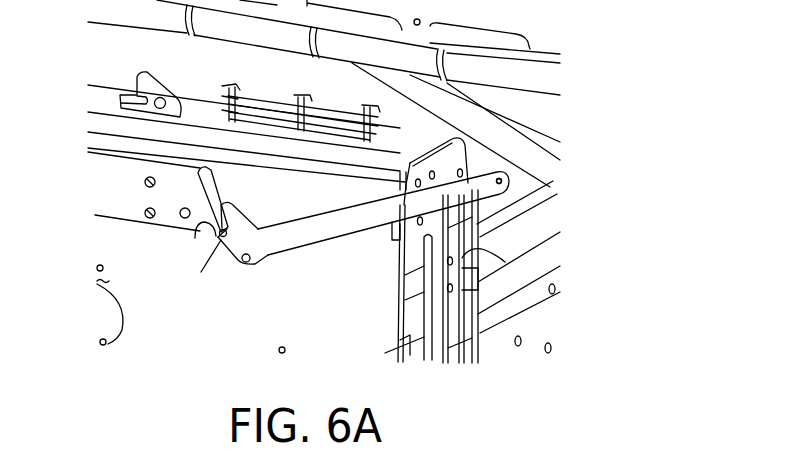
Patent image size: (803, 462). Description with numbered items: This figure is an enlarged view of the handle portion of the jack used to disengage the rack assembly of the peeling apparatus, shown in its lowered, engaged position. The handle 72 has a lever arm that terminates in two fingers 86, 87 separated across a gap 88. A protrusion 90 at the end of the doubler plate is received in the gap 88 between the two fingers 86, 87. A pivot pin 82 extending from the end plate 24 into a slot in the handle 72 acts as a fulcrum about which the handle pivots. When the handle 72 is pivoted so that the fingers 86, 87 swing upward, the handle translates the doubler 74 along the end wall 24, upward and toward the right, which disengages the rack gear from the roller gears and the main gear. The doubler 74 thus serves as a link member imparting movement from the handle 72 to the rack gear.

The end plate 24 is at (366, 358).
The handle 72 is at (481, 192).
The doubler 74 is at (113, 208).
The pivot pin 82 is at (250, 264).
The finger 86 is at (230, 208).
The finger 87 is at (205, 238).
The gap 88 is at (225, 242).
The protrusion 90 is at (201, 272).